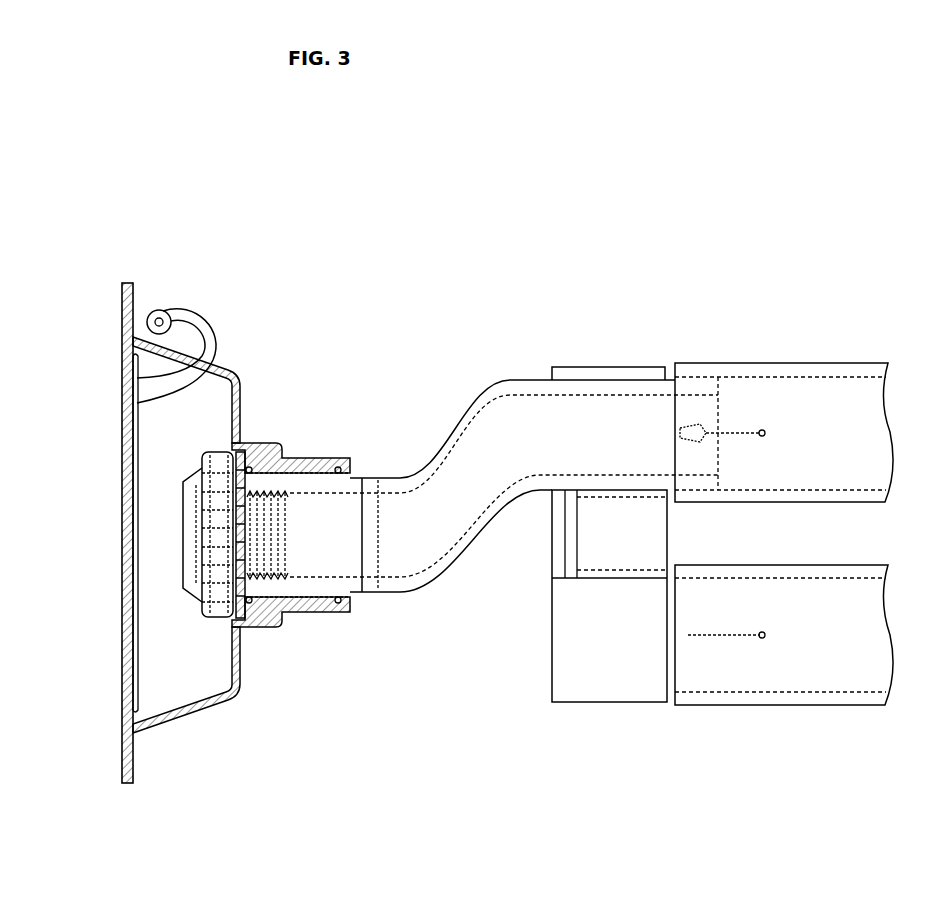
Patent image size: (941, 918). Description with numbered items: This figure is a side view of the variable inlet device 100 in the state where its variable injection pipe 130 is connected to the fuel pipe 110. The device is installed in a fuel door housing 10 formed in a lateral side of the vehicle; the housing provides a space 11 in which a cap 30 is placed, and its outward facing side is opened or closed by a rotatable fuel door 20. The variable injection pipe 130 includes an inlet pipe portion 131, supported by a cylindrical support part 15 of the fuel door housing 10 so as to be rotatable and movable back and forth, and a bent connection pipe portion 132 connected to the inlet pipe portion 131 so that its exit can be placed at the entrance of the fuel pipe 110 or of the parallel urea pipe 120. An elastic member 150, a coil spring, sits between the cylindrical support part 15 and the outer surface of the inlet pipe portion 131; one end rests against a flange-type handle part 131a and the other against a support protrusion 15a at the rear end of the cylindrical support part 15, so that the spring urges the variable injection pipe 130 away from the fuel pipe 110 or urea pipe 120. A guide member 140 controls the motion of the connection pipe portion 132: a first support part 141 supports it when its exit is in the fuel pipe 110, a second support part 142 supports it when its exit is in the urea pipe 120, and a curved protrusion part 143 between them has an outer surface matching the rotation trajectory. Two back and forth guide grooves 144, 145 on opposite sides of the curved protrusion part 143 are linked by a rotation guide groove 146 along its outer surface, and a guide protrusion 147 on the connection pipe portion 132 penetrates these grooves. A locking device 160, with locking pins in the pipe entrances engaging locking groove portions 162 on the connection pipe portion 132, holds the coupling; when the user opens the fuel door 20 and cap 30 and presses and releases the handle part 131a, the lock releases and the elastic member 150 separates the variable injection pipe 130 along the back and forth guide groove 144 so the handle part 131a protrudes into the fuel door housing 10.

The variable inlet device 100 is at (492, 212).
The fuel door housing 10 is at (236, 378).
The space 11 is at (150, 448).
The cylindrical support part 15 is at (300, 456).
The support protrusion 15a is at (352, 472).
The fuel door 20 is at (130, 527).
The cap 30 is at (185, 575).
The fuel pipe 110 is at (836, 363).
The urea pipe 120 is at (784, 669).
The variable injection pipe 130 is at (424, 422).
The inlet pipe portion 131 is at (312, 608).
The handle part 131a is at (248, 443).
The connection pipe portion 132 is at (500, 378).
The guide member 140 is at (619, 650).
The first support part 141 is at (600, 367).
The second support part 142 is at (607, 702).
The curved protrusion part 143 is at (655, 550).
The back and forth guide groove 144 is at (600, 493).
The back and forth guide groove 145 is at (596, 580).
The rotation guide groove 146 is at (565, 525).
The guide protrusion 147 is at (637, 495).
The elastic member 150 is at (262, 600).
The locking device 160 is at (726, 372).
The locking groove portion 162 is at (688, 430).